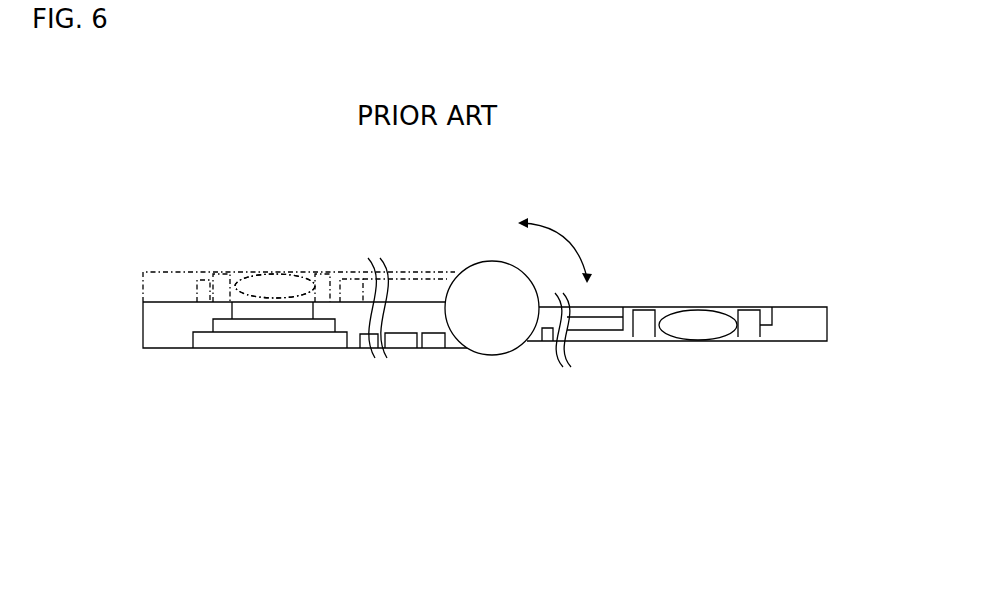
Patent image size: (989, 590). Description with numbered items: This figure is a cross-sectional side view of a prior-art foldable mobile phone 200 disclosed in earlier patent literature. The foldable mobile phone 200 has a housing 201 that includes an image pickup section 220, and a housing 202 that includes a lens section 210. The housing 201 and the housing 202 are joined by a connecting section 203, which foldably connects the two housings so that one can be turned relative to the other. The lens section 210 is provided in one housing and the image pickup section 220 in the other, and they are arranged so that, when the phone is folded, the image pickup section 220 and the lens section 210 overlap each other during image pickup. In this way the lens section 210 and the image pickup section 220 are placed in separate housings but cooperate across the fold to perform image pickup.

The foldable mobile phone 200 is at (671, 160).
The housing 201 is at (139, 287).
The housing 202 is at (139, 329).
The connecting section 203 is at (498, 318).
The lens section 210 is at (263, 268).
The image pickup section 220 is at (198, 318).